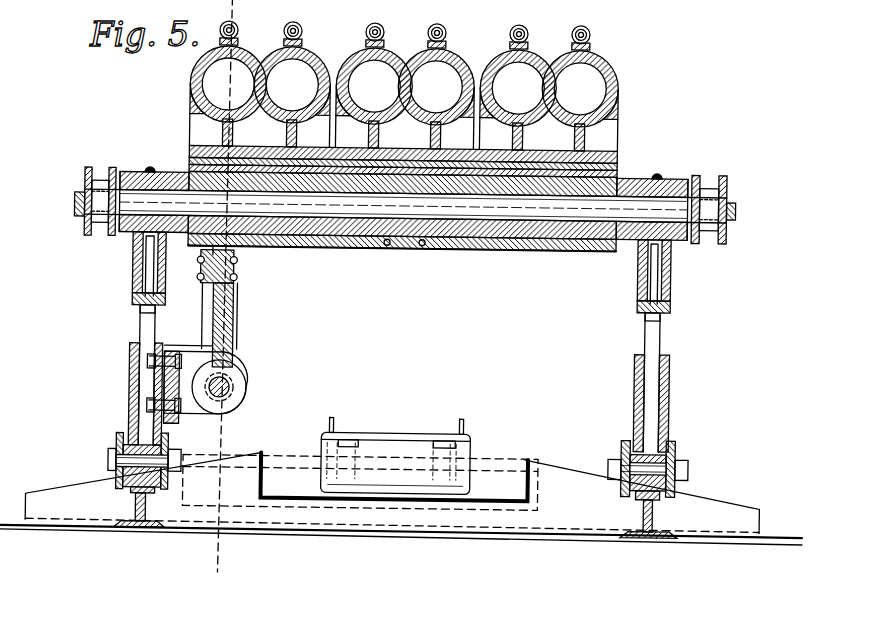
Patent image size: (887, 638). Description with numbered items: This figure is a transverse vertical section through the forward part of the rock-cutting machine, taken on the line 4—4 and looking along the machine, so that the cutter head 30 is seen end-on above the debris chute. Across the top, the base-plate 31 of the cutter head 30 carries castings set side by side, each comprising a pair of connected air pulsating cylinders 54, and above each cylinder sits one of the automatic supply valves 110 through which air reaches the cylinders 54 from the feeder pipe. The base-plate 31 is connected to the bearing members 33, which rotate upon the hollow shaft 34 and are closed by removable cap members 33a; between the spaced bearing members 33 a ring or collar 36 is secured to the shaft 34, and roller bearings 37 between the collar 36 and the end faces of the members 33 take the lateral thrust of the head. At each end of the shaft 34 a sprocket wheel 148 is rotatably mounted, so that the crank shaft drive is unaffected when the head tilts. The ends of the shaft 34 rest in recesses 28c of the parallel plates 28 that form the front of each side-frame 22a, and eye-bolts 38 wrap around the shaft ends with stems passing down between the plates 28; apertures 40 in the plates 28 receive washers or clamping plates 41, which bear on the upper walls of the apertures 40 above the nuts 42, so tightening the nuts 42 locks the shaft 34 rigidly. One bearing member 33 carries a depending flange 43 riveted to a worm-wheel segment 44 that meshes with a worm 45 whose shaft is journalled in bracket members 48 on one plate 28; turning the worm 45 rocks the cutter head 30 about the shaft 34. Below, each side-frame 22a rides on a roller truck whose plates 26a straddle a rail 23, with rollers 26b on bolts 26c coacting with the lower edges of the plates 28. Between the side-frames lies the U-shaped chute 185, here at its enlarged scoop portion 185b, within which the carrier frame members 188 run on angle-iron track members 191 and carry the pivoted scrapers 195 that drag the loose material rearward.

The section line 4- 4 is at (238, 12).
The cutter head 30 is at (463, 33).
The air pulsating cylinders 54 is at (343, 58).
The automatic supply valves 110 is at (583, 25).
The bearing members 33 is at (183, 171).
The removable cap members 33a is at (553, 250).
The hollow shaft 34 is at (673, 179).
The ring or collar 36 is at (408, 250).
The roller bearings 37 is at (386, 250).
The base-plate 31 is at (619, 170).
The sprocket wheels 148 is at (93, 195).
The recesses 28c is at (702, 225).
The eye-bolts 38 is at (146, 267).
The nuts 42 is at (648, 315).
The washers or clamping plates 41 is at (672, 302).
The apertures 40 is at (667, 329).
The side-frames 22a is at (691, 358).
The plates 28 is at (130, 376).
The depending flange 43 is at (203, 271).
The worm-wheel segment 44 is at (239, 291).
The worm 45 is at (239, 388).
The bracket members 48 is at (191, 413).
The plates 26a is at (696, 411).
The rollers 26b is at (681, 452).
The pins or bolts 26c is at (692, 472).
The rails 23 is at (675, 537).
The scoop portion 185b is at (83, 507).
The chute 185 is at (528, 459).
The frame members 188 is at (440, 436).
The angle-iron track members 191 is at (464, 423).
The scraper 195 is at (389, 479).